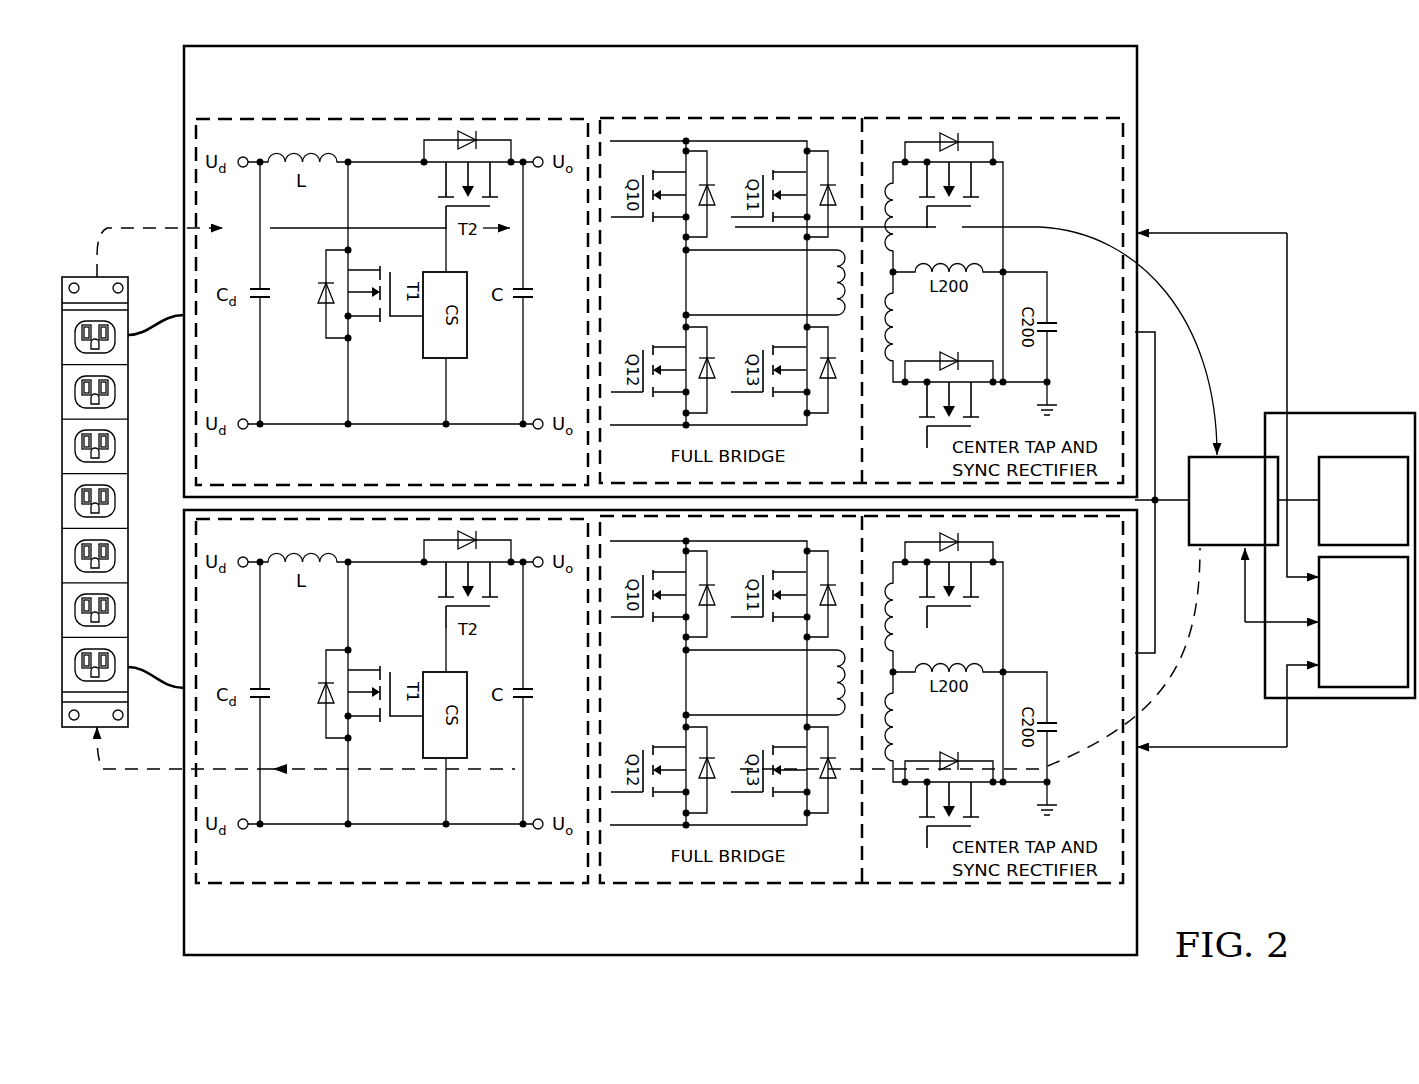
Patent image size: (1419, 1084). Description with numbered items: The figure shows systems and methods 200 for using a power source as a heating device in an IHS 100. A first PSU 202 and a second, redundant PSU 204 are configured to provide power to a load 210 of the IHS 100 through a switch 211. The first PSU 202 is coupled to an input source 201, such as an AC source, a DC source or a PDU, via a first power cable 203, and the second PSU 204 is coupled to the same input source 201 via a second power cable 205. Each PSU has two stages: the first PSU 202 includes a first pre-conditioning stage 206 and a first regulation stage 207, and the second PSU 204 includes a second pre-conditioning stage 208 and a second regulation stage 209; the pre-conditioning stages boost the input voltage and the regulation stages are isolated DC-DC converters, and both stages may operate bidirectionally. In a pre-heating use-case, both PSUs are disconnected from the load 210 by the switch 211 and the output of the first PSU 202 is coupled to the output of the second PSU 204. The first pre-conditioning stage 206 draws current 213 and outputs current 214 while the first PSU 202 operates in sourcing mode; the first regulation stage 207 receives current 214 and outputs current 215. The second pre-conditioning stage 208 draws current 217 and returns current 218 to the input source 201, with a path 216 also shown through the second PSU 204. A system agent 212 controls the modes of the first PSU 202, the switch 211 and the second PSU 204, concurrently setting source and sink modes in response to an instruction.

The IHS 100 is at (1366, 410).
The systems and methods for using a power source as a heating device 200 is at (1285, 173).
The input source 201 is at (79, 277).
The first PSU 202 is at (660, 271).
The first power cable 203 is at (170, 315).
The second PSU 204 is at (692, 732).
The second power cable 205 is at (170, 690).
The first pre-conditioning stage 206 is at (298, 118).
The first regulation stage 207 is at (940, 118).
The second pre-conditioning stage 208 is at (298, 886).
The second regulation stage 209 is at (938, 886).
The load 210 is at (1363, 501).
The switch 211 is at (1233, 501).
The system agent 212 is at (1363, 622).
The current 213 is at (148, 226).
The current 214 is at (400, 226).
The current 215 is at (1052, 226).
The feedback signal path 216 is at (864, 771).
The current 217 is at (398, 771).
The current 218 is at (141, 772).